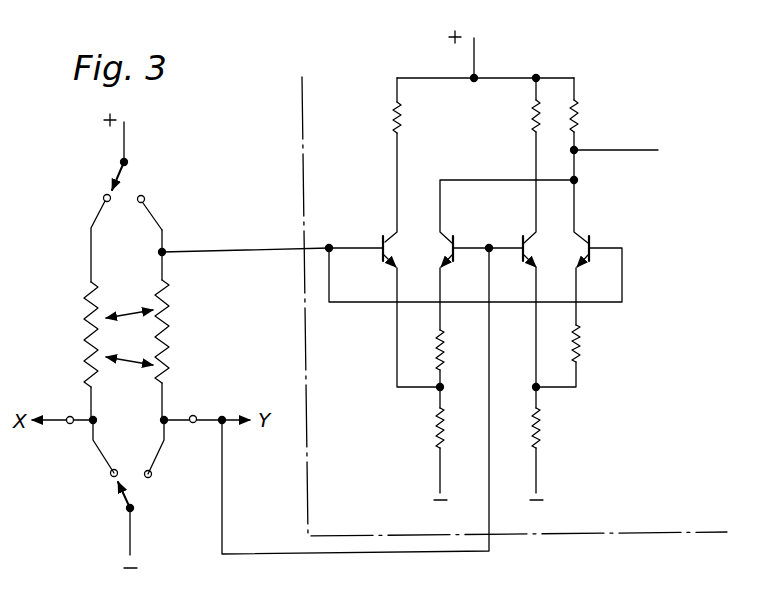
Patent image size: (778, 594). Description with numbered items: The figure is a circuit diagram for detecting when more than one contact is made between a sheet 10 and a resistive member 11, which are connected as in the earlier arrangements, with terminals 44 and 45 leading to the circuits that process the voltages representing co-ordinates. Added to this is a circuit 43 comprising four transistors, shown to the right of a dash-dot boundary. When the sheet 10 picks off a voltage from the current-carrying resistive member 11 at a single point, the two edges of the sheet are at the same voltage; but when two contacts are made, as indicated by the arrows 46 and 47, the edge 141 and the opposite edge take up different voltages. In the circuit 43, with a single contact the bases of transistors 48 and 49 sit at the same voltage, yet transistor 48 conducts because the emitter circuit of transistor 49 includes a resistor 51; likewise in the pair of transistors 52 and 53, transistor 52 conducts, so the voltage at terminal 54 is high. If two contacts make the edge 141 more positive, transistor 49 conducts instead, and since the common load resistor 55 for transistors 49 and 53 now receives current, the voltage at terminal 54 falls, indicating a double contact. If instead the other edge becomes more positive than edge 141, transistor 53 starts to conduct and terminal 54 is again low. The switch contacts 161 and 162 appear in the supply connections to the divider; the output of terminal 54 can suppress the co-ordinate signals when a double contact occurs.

The sheet 10 is at (168, 332).
The resistive member 11 is at (90, 300).
The circuit 43 is at (350, 163).
The terminal 44 is at (70, 425).
The terminal 45 is at (194, 415).
The arrow 46 is at (130, 313).
The arrow 47 is at (130, 363).
The transistor 48 is at (380, 243).
The transistor 49 is at (457, 242).
The resistor 51 is at (437, 352).
The transistor 52 is at (519, 240).
The transistor 53 is at (592, 240).
The terminal 54 is at (578, 148).
The common load resistor 55 is at (578, 111).
The edge 141 is at (158, 208).
The switch 161 is at (116, 186).
The switch 162 is at (125, 500).